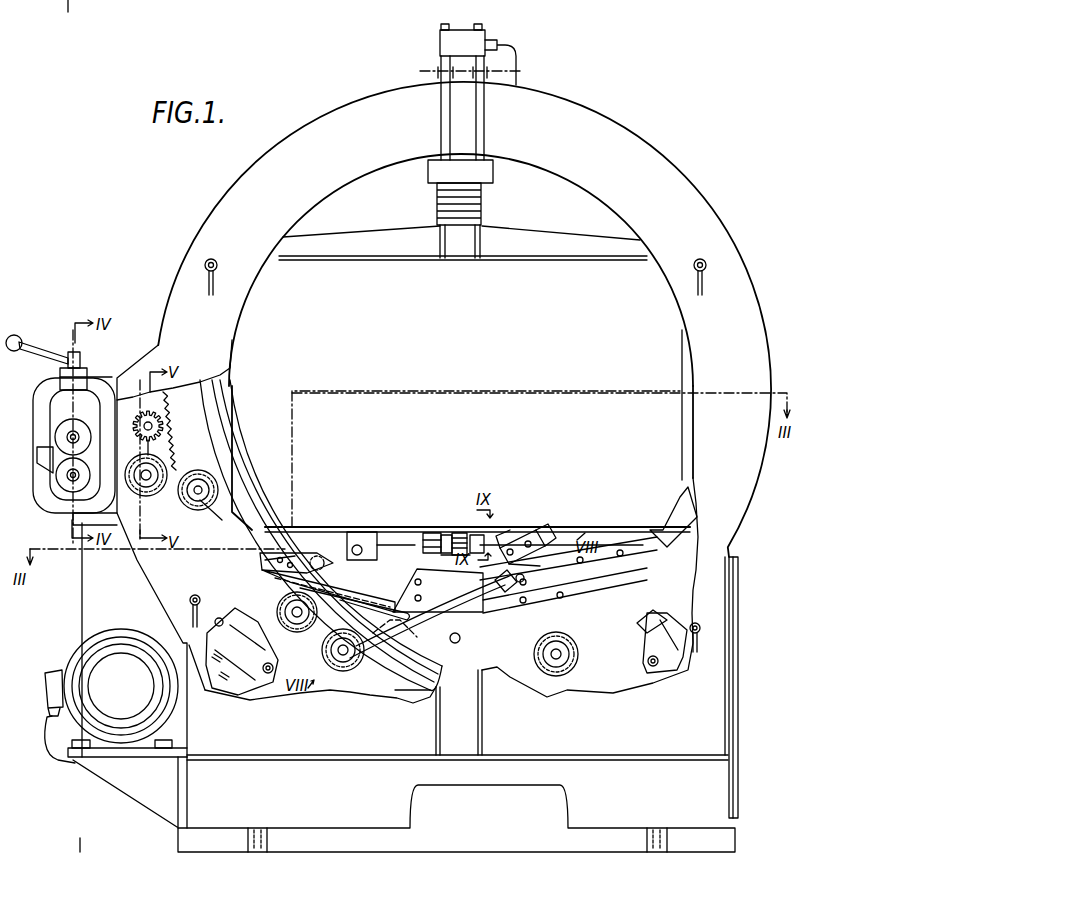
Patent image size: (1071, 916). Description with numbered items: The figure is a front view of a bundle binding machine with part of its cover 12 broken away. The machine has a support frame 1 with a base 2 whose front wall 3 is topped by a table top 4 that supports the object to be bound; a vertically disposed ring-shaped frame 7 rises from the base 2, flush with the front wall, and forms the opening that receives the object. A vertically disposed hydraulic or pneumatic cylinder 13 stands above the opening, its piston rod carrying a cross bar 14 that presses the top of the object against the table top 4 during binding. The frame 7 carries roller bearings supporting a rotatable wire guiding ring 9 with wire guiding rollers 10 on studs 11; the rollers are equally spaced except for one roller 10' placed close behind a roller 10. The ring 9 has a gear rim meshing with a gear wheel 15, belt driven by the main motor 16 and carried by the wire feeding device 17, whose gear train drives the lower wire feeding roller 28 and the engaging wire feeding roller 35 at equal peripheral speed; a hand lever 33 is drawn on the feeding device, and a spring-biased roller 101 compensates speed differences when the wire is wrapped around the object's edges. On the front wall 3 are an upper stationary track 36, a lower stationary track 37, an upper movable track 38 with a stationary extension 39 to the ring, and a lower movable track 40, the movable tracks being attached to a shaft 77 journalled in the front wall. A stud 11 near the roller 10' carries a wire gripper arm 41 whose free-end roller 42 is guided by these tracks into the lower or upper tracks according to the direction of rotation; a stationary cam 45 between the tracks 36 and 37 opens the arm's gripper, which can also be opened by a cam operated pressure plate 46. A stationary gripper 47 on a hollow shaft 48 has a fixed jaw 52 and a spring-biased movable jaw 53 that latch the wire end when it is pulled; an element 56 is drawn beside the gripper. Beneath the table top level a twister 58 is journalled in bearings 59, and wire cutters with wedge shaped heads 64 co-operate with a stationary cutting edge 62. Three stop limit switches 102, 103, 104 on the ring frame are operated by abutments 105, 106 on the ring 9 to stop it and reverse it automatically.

The support frame 1 is at (741, 707).
The base 2 is at (401, 596).
The front wall 3 is at (482, 610).
The table top 4 is at (597, 527).
The ring-shaped frame 7 is at (662, 520).
The wire guiding ring 9 is at (307, 535).
The wire guiding rollers 10 is at (213, 524).
The wire guiding roller 10' is at (282, 609).
The studs 11 is at (198, 486).
The cover 12 is at (464, 319).
The hydraulic or pneumatic cylinder 13 is at (462, 75).
The cross bar 14 is at (523, 245).
The gear wheel 15 is at (162, 420).
The main motor 16 is at (130, 640).
The wire feeding device 17 is at (35, 387).
The lower wire feeding roller 28 is at (68, 484).
The hand lever 33 is at (22, 339).
The wire feeding roller 35 is at (60, 433).
The upper stationary track 36 is at (565, 588).
The lower stationary track 37 is at (558, 612).
The upper movable track 38 is at (366, 590).
The stationary extension 39 is at (268, 565).
The lower movable track 40 is at (350, 603).
The wire gripper arm 41 is at (412, 646).
The roller 42 is at (506, 592).
The stationary cam 45 is at (478, 595).
The cam operated pressure plate 46 is at (370, 545).
The stationary gripper 47 is at (522, 543).
The hollow shaft 48 is at (545, 536).
The fixed jaw 52 is at (521, 582).
The movable jaw 53 is at (508, 545).
The spring 56 is at (540, 550).
The twister 58 is at (458, 533).
The bearings 59 is at (443, 535).
The stationary cutting edge 62 is at (432, 548).
The wedge shaped head 64 is at (425, 545).
The shaft 77 is at (320, 563).
The roller 101 is at (152, 485).
The stop limit switch 102 is at (228, 643).
The stop limit switch 103 is at (246, 668).
The stop limit switch 104 is at (675, 680).
The abutment 105 is at (426, 700).
The abutment 106 is at (643, 620).